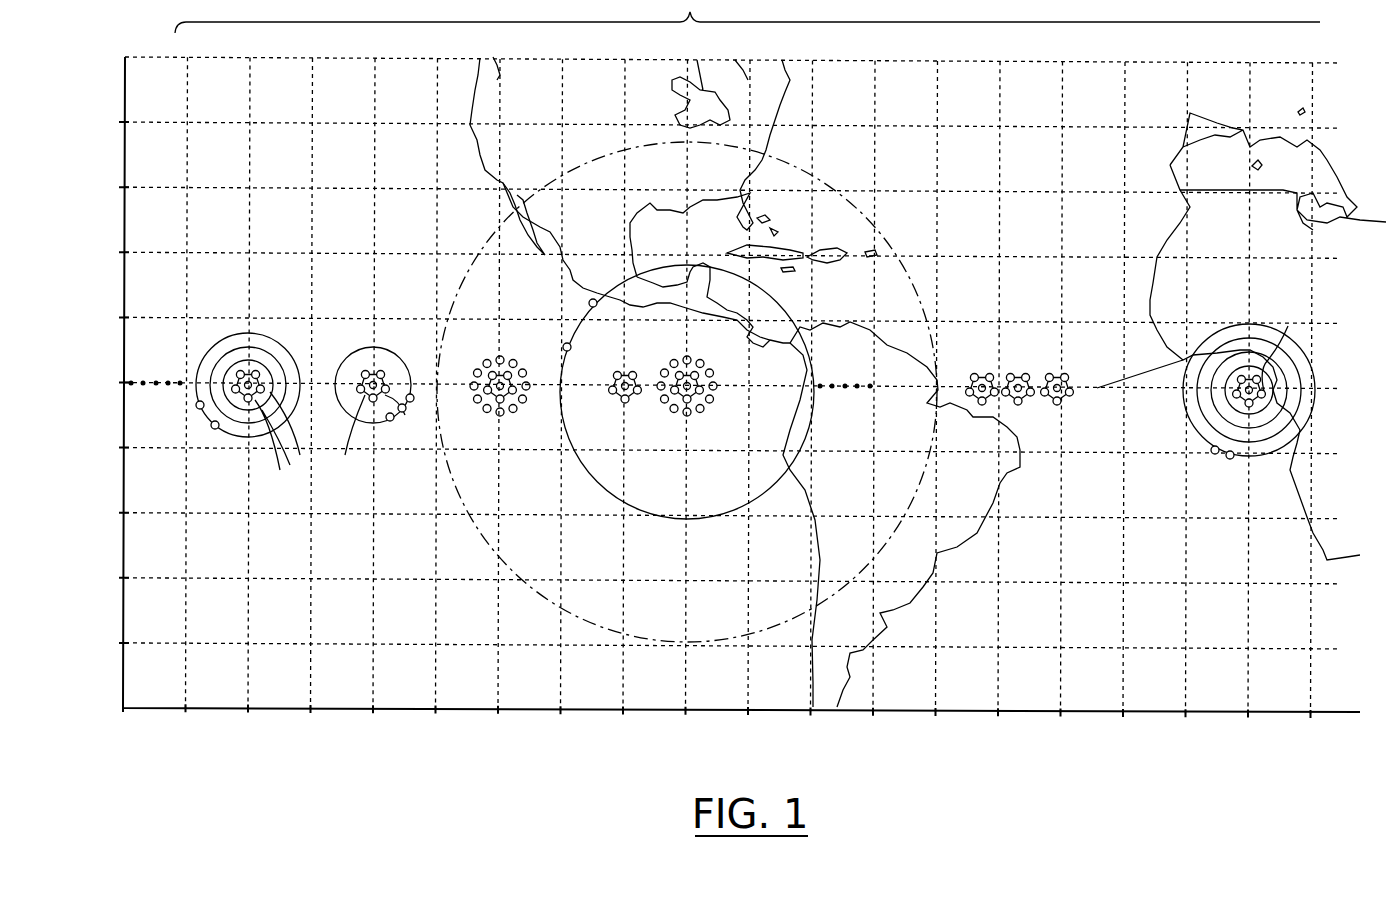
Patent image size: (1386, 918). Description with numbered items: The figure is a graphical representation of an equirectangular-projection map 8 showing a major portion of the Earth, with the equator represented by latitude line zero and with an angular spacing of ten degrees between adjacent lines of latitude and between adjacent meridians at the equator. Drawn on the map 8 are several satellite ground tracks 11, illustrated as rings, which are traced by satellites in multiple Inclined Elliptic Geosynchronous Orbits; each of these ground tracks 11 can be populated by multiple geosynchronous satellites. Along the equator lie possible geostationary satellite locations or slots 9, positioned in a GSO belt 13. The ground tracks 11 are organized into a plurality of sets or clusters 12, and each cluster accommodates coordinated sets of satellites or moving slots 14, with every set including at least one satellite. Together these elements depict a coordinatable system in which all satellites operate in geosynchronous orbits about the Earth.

The equirectangular-projection map 8 is at (220, 98).
The geostationary satellite slots 9 is at (131, 383).
The satellite ground tracks 11 is at (402, 372).
The clusters of ground tracks 12 is at (288, 335).
The GSO belt 13 is at (1097, 388).
The moving slots 14 is at (255, 375).